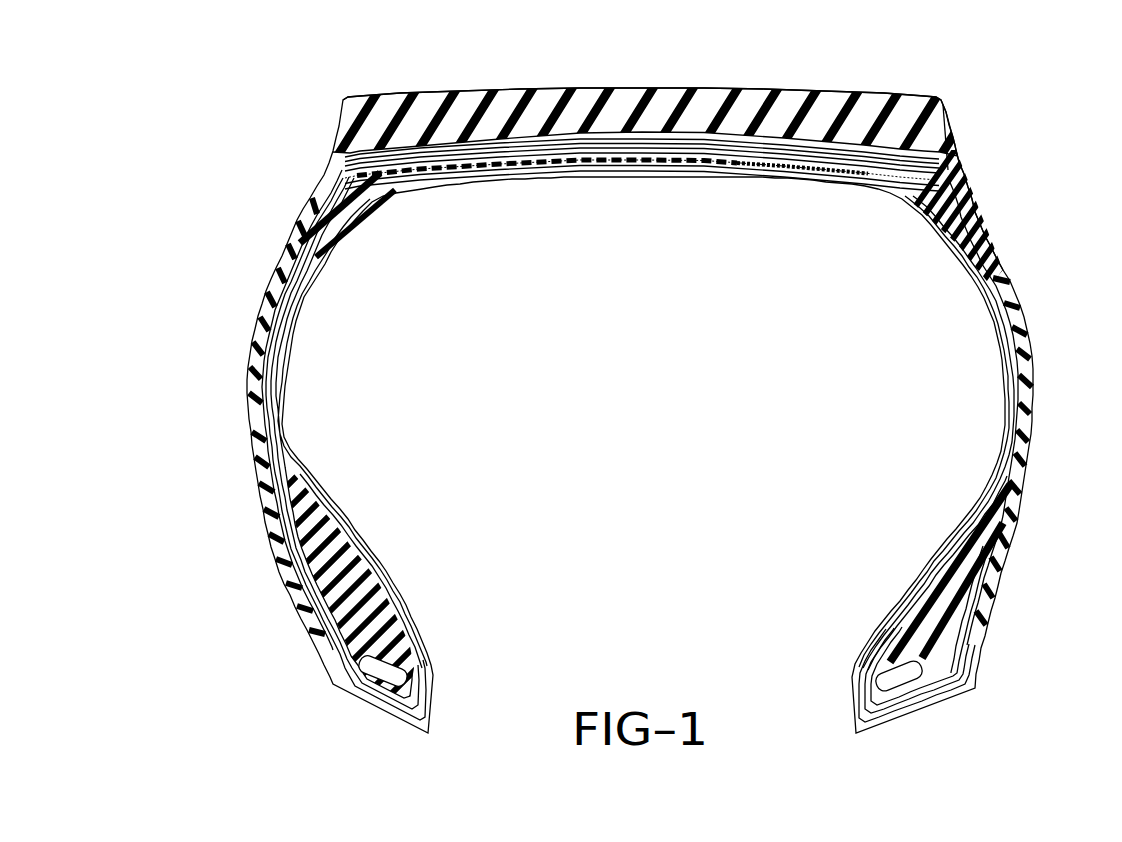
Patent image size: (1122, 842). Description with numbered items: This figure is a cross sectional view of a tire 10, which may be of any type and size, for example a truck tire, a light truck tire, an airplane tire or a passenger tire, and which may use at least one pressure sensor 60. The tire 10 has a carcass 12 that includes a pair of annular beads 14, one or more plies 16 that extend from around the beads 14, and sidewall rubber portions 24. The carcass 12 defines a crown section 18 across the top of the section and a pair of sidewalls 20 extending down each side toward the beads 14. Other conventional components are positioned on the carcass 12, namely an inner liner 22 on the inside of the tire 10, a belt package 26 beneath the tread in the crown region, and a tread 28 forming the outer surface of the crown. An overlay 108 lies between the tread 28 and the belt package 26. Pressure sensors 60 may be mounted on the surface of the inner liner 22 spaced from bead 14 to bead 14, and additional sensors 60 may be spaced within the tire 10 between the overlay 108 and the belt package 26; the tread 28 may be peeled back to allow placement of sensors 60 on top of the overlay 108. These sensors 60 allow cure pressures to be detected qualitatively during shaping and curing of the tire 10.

The tire 10 is at (262, 133).
The carcass 12 is at (963, 178).
The annular bead 14 is at (368, 678).
The ply 16 is at (348, 580).
The crown section 18 is at (586, 192).
The sidewall 20 is at (252, 490).
The inner liner 22 is at (313, 510).
The sidewall rubber portion 24 is at (247, 432).
The belt package 26 is at (729, 160).
The tread 28 is at (478, 94).
The pressure sensor 60 is at (946, 122).
The overlay 108 is at (736, 140).